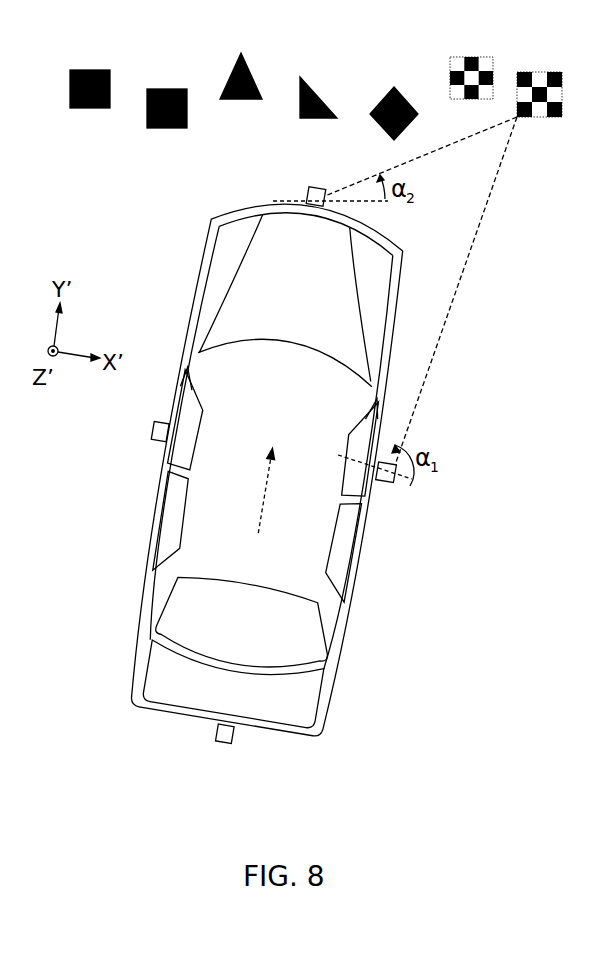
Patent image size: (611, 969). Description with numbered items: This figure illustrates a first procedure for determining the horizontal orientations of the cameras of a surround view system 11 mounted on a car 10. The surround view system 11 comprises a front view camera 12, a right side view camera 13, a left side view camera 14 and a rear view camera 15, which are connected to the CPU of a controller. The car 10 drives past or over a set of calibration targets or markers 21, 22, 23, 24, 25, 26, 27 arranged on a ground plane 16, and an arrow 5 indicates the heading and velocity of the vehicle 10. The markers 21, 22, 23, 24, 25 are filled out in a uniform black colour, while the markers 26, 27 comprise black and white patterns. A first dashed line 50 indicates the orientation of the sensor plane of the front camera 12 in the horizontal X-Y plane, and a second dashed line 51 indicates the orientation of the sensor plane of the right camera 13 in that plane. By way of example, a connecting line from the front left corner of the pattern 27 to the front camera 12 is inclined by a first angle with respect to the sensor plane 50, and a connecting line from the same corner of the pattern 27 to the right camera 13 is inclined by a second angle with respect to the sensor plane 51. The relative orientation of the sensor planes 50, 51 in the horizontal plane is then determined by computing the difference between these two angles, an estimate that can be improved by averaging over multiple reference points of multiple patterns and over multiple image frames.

The arrow 5 is at (267, 492).
The car 10 is at (140, 617).
The surround view system 11 is at (112, 472).
The front view camera 12 is at (318, 186).
The right side view camera 13 is at (386, 484).
The left side view camera 14 is at (152, 434).
The rear view camera 15 is at (225, 745).
The ground plane 16 is at (432, 728).
The marker 21 is at (93, 71).
The marker 22 is at (170, 88).
The marker 23 is at (251, 67).
The marker 24 is at (326, 98).
The marker 25 is at (400, 90).
The marker 26 is at (471, 56).
The pattern 27 is at (541, 72).
The first dashed line 50 is at (384, 204).
The second dashed line 51 is at (410, 481).